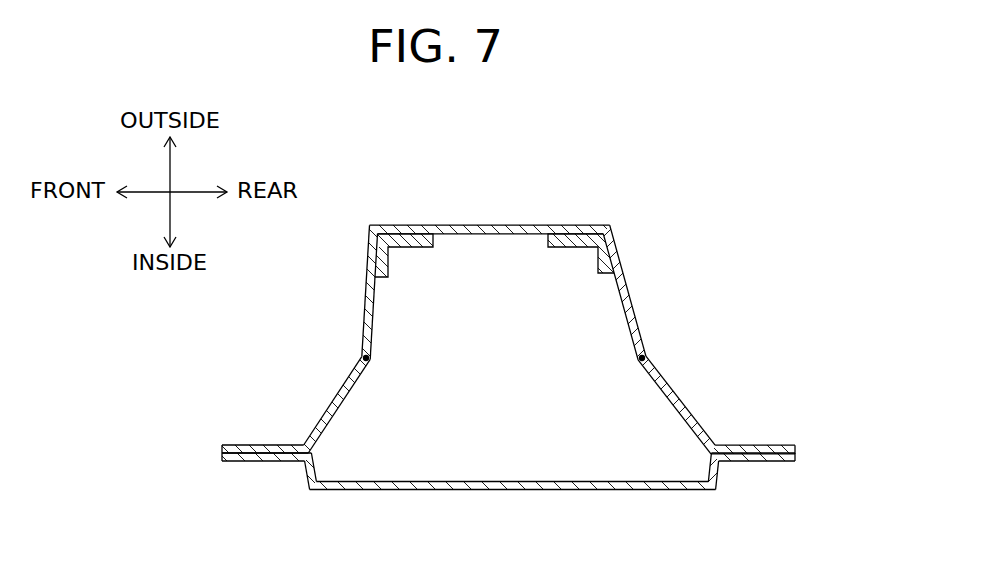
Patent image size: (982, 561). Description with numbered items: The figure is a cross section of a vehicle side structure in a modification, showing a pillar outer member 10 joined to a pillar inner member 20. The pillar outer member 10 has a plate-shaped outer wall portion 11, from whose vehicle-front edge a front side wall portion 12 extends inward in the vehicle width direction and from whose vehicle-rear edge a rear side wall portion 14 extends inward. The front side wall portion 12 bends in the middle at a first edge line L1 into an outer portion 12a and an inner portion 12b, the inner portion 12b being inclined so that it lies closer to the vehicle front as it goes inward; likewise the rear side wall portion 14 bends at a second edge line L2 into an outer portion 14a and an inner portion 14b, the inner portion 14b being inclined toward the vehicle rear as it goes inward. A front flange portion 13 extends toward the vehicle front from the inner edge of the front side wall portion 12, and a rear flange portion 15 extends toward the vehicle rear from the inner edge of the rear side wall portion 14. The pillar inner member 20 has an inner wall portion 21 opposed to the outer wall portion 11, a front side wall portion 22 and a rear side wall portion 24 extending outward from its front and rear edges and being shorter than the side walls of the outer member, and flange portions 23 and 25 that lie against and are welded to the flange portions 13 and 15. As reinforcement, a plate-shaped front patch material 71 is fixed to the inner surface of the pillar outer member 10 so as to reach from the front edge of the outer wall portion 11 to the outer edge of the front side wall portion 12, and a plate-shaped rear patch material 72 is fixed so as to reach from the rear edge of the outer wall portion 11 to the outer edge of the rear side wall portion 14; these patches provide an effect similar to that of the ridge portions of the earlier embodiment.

The pillar outer member 10 is at (627, 216).
The outer wall portion 11 is at (528, 224).
The front side wall portion 12 is at (262, 312).
The outer portion 12a is at (362, 303).
The inner portion 12b is at (333, 401).
The flange portion 13 is at (232, 445).
The rear side wall portion 14 is at (750, 300).
The outer portion 14a is at (636, 303).
The inner portion 14b is at (680, 398).
The flange portion 15 is at (767, 445).
The edge line L1 is at (372, 362).
The edge line L2 is at (641, 360).
The front patch material 71 is at (416, 249).
The rear patch material 72 is at (559, 249).
The pillar inner member 20 is at (637, 496).
The inner wall portion 21 is at (506, 491).
The front side wall portion 22 is at (306, 471).
The flange portion 23 is at (240, 462).
The rear side wall portion 24 is at (716, 470).
The flange portion 25 is at (764, 463).